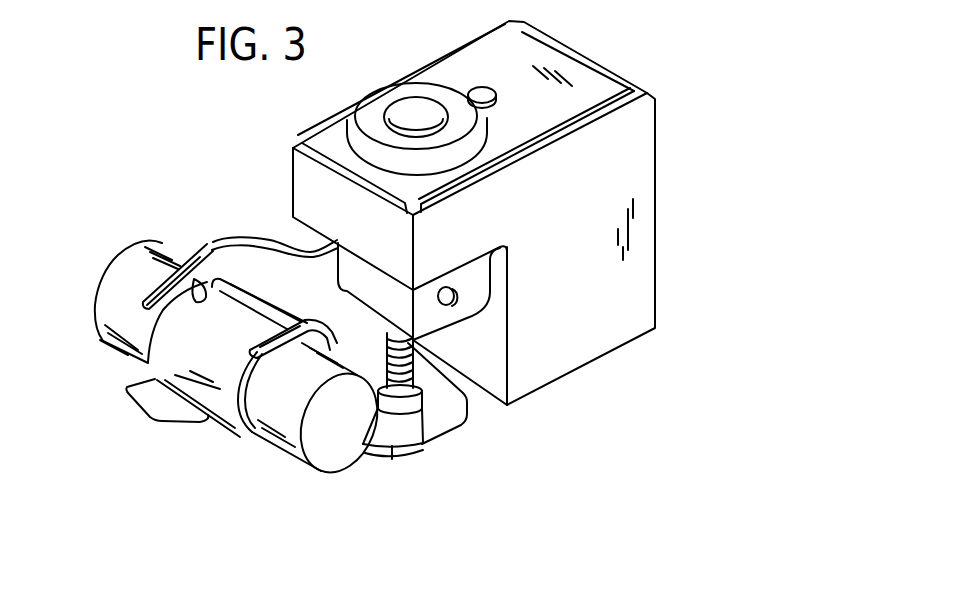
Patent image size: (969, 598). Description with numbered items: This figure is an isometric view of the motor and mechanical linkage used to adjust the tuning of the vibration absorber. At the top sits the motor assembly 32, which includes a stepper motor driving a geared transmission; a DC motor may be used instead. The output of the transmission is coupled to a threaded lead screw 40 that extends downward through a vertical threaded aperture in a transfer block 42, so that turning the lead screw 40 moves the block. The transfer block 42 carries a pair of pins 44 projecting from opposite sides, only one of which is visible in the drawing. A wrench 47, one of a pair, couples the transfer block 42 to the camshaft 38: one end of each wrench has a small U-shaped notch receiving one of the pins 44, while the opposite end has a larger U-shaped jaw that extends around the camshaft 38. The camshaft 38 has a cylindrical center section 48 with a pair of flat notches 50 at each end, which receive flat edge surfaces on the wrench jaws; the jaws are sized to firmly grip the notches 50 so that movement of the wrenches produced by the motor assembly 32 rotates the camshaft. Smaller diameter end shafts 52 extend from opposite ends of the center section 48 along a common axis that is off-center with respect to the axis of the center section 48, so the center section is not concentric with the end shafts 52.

The motor assembly 32 is at (497, 53).
The camshaft 38 is at (222, 383).
The threaded lead screw 40 is at (417, 440).
The transfer block 42 is at (480, 281).
The pins 44 is at (456, 304).
The wrench 47 is at (265, 257).
The cylindrical center section 48 is at (155, 358).
The flat notches 50 is at (207, 262).
The end shafts 52 is at (117, 303).